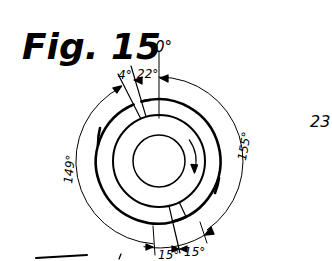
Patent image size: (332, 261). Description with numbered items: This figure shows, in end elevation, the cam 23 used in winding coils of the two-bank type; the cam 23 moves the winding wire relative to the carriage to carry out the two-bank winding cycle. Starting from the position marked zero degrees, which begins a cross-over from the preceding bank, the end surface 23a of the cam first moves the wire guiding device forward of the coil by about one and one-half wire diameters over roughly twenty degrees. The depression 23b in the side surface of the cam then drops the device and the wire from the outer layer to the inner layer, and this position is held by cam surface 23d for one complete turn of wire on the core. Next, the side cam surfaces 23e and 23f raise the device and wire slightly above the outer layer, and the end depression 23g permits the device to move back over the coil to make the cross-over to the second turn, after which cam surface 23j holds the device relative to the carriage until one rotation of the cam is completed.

The cam 23 is at (122, 161).
The end surface of the cam 23a is at (161, 101).
The depression in the side surface of the cam 23b is at (138, 104).
The cam surface 23d is at (101, 138).
The side cam surface 23e is at (143, 247).
The side cam surface 23f is at (201, 228).
The end depression of the cam 23g is at (176, 210).
The cam surface 23j is at (216, 188).